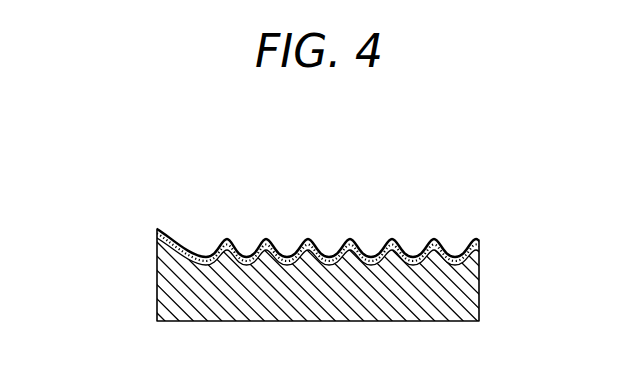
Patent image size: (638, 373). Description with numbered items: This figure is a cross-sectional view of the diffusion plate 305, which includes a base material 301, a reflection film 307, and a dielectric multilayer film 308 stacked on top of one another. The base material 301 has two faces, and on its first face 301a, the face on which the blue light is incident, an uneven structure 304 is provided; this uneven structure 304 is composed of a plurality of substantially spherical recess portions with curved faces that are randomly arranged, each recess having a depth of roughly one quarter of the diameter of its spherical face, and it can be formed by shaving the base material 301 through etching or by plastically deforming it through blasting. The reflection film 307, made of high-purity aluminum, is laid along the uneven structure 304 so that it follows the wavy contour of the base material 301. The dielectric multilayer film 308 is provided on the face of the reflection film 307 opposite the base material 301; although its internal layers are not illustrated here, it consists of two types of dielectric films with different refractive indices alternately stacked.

The base material 301 is at (464, 303).
The first face 301a is at (207, 250).
The uneven structure 304 is at (287, 244).
The diffusion plate 305 is at (141, 274).
The reflection film 307 is at (450, 250).
The dielectric multilayer film 308 is at (392, 240).